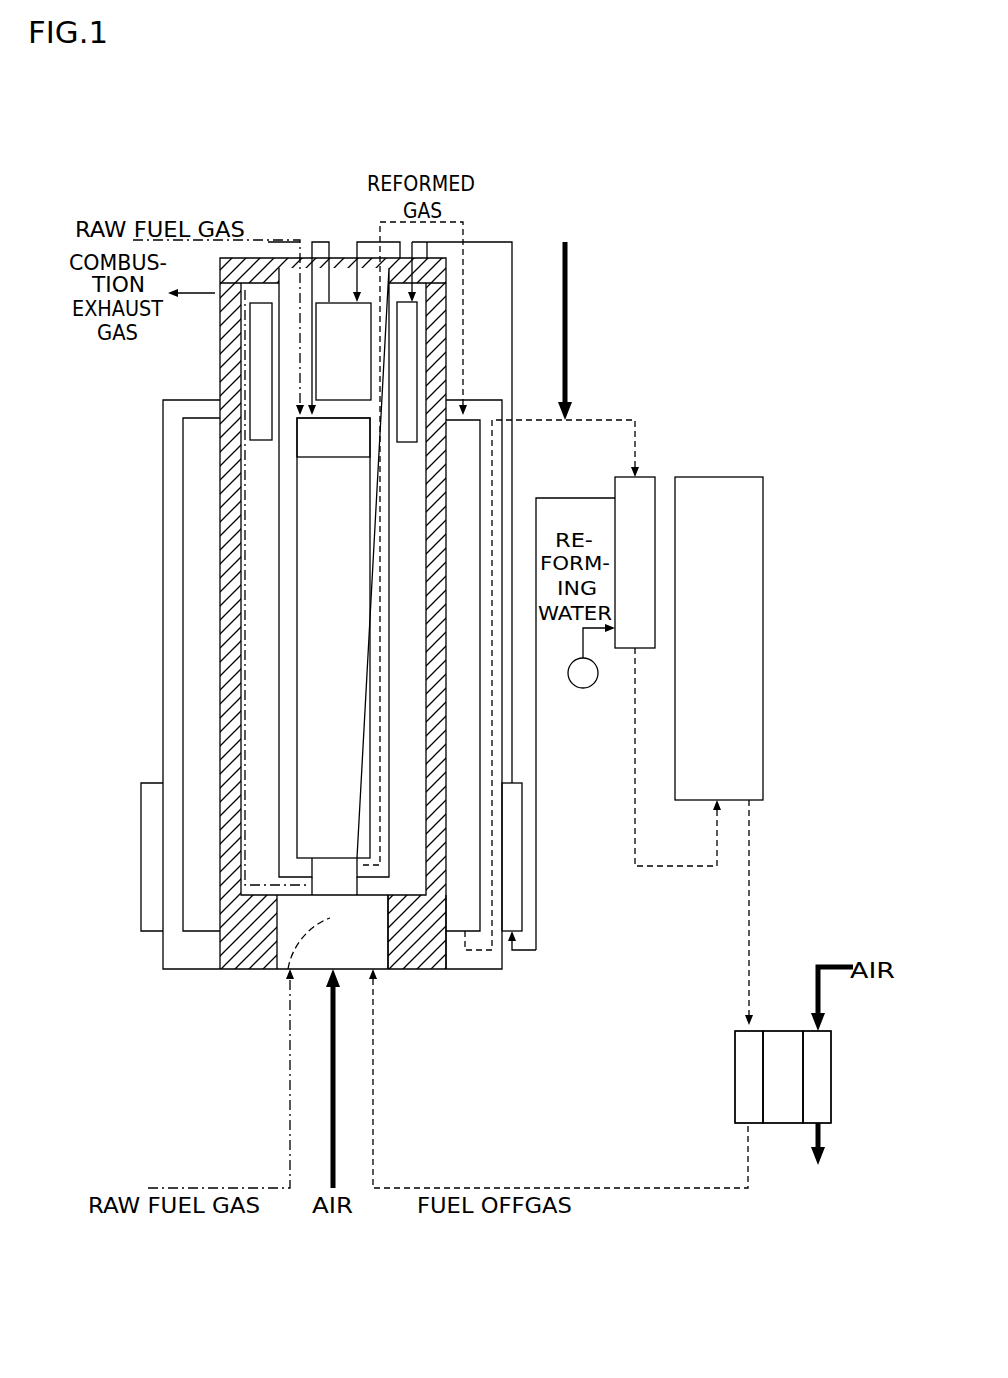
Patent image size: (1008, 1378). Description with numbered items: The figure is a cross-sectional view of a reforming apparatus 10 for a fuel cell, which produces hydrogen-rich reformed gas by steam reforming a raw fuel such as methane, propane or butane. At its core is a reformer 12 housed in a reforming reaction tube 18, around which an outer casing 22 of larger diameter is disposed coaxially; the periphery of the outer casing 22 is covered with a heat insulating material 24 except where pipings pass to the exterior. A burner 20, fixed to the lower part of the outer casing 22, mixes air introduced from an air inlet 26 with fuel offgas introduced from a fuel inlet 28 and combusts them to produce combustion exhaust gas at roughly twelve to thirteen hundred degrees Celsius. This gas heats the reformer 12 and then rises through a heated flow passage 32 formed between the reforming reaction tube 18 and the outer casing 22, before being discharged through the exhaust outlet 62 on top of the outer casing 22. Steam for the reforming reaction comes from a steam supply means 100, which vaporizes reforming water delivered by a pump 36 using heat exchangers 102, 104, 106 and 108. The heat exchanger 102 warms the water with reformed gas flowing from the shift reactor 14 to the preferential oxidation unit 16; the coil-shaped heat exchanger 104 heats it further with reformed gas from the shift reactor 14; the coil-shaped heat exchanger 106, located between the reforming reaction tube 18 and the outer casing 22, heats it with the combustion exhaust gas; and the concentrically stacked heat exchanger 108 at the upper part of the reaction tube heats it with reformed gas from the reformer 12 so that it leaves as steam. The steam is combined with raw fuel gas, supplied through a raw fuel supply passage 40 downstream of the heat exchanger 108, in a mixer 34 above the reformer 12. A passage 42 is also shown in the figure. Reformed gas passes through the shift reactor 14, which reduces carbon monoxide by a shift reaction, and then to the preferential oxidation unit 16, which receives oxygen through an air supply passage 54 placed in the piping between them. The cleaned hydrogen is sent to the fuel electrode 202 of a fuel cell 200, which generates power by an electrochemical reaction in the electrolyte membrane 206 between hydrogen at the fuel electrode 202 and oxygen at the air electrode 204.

The reforming apparatus 10 is at (478, 134).
The steam supply means 100 is at (507, 226).
The fuel cell 200 is at (786, 944).
The reformer 12 is at (313, 575).
The shift reactor 14 is at (198, 645).
The preferential oxidation unit 16 is at (712, 477).
The reforming reaction tube 18 is at (275, 507).
The burner 20 is at (283, 970).
The outer casing 22 is at (403, 860).
The heat insulating material 24 is at (230, 368).
The air inlet 26 is at (330, 1087).
The fuel inlet 28 is at (373, 1155).
The heated flow passage 32 is at (258, 718).
The mixer 34 is at (297, 440).
The pump 36 is at (594, 684).
The raw fuel supply passage 40 is at (273, 240).
The reformed gas pipe 42 is at (318, 240).
The air supply passage 54 is at (566, 318).
The exhaust outlet 62 is at (212, 294).
The heat exchanger 102 is at (645, 477).
The heat exchanger 104 is at (150, 848).
The heat exchanger 106 is at (408, 330).
The heat exchanger 108 is at (330, 303).
The fuel electrode 202 is at (735, 1077).
The air electrode 204 is at (831, 1077).
The electrolyte membrane 206 is at (785, 1123).